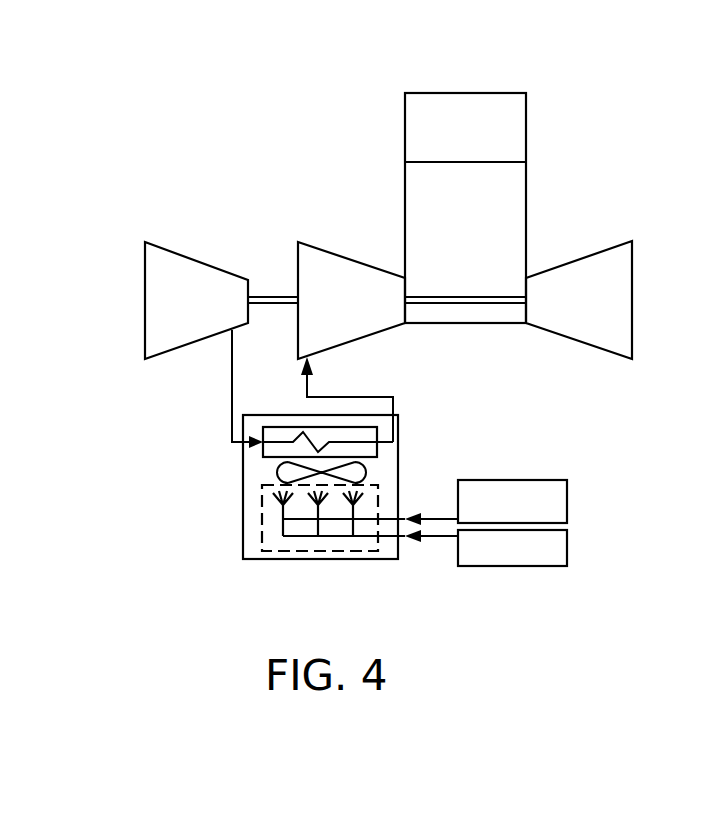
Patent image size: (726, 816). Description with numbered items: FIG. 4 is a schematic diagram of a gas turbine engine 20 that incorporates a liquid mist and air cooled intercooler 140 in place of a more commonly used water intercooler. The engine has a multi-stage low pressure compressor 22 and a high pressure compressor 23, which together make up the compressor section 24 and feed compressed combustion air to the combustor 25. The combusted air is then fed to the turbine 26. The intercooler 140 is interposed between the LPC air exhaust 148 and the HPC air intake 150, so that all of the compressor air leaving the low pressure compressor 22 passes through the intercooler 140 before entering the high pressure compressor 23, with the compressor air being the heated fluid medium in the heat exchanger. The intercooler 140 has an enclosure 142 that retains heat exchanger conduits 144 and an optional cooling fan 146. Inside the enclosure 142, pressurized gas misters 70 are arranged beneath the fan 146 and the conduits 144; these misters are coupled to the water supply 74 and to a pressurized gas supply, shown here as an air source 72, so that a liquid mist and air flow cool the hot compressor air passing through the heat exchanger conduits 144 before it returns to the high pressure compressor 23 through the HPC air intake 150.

The gas turbine engine 20 is at (574, 205).
The low pressure compressor 22 is at (228, 277).
The high pressure compressor 23 is at (351, 281).
The compressor section 24 is at (270, 240).
The combustor 25 is at (502, 121).
The turbine 26 is at (628, 317).
The pressurized gas mister 70 is at (262, 529).
The air supply 72 is at (556, 548).
The water supply 74 is at (556, 487).
The intercooler 140 is at (382, 525).
The enclosure 142 is at (316, 525).
The heat exchanger conduits 144 is at (369, 432).
The cooling fan 146 is at (285, 467).
The LPC air exhaust 148 is at (232, 363).
The HPC air intake 150 is at (308, 390).